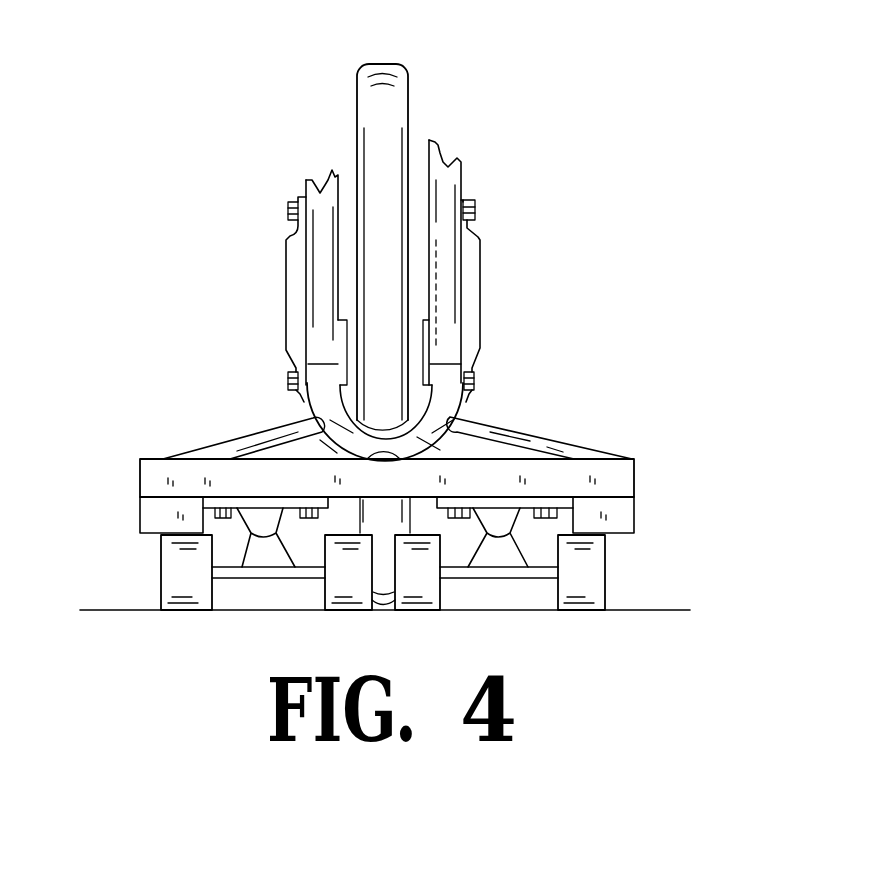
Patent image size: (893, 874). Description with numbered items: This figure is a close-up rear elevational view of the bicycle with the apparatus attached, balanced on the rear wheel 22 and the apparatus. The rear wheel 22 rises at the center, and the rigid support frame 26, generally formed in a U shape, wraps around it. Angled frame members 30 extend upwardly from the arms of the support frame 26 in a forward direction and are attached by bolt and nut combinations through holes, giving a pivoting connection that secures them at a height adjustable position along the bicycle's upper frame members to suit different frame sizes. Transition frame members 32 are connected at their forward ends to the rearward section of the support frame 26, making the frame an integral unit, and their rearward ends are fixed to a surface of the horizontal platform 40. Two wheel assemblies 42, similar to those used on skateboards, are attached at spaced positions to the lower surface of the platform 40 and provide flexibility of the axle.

The rear wheel 22 is at (398, 114).
The rigid support frame 26 is at (428, 455).
The angled frame members 30 is at (292, 284).
The transition frame members 32 is at (228, 440).
The horizontal platform 40 is at (153, 467).
The wheel assemblies 42 is at (177, 565).